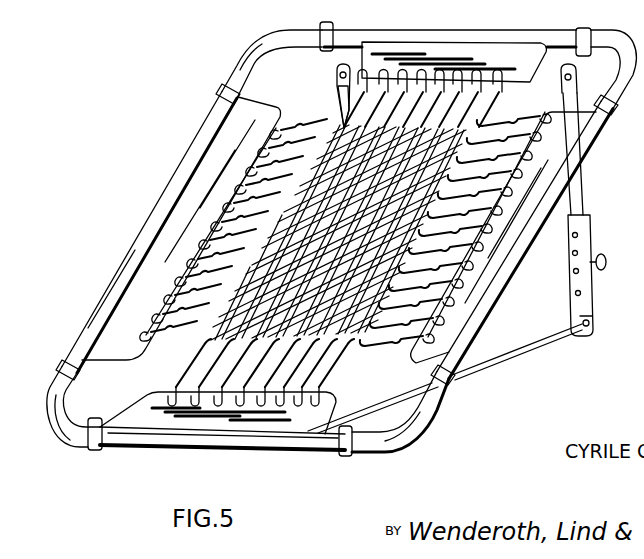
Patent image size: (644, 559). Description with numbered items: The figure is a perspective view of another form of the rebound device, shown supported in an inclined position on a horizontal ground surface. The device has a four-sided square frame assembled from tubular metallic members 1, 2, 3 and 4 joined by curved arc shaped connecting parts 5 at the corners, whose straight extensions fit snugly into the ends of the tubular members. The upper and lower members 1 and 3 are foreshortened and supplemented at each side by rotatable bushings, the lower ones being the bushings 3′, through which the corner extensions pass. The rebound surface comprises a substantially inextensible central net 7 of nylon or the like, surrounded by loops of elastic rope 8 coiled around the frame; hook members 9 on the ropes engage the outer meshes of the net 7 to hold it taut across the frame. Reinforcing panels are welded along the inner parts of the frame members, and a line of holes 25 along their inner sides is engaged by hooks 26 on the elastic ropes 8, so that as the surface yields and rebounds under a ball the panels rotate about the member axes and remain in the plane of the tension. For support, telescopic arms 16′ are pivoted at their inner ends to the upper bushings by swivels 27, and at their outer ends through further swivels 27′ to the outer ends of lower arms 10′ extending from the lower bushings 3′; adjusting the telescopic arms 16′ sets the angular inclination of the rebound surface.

The tubular metallic member 1 is at (340, 35).
The tubular metallic member 2 is at (520, 246).
The tubular metallic member 3 is at (205, 449).
The bushing 3′ is at (109, 448).
The tubular metallic member 4 is at (191, 152).
The curved arc shaped connecting part 5 is at (273, 43).
The net 7 is at (214, 346).
The elastic rope 8 is at (333, 100).
The hook member 9 is at (338, 132).
The lower arm 10′ is at (505, 364).
The telescopic arm 16′ is at (590, 228).
The line of holes 25 is at (192, 264).
The hook 26 is at (530, 142).
The swivel 27 is at (606, 73).
The swivel 27′ is at (582, 338).